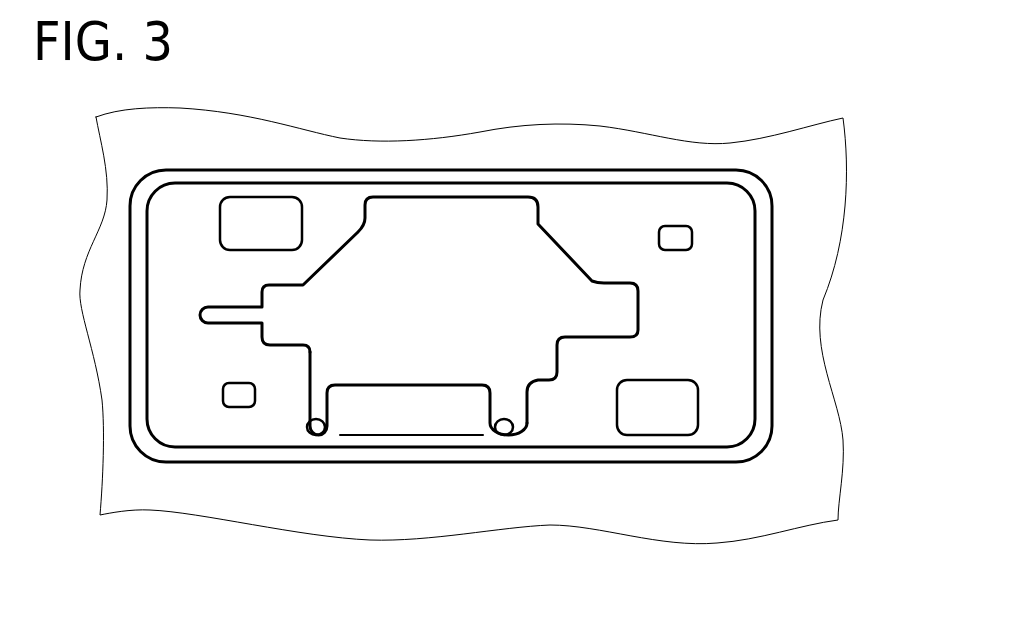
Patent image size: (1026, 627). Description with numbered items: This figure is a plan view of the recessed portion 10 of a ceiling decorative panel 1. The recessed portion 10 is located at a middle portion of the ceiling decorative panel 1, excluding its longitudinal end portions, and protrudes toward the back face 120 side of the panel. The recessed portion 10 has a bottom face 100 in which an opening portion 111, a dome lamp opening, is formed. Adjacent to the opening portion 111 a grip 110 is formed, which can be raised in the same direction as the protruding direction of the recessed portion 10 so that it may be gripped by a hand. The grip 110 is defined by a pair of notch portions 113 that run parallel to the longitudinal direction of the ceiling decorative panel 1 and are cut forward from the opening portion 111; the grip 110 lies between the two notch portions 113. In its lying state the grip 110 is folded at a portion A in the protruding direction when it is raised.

The ceiling decorative panel 1 is at (720, 500).
The recessed portion 10 is at (778, 263).
The bottom face 100 is at (605, 225).
The grip 110 is at (393, 412).
The opening portion 111 is at (431, 245).
The notch portions 113 is at (303, 420).
The back face 120 is at (207, 423).
The portion A is at (447, 437).